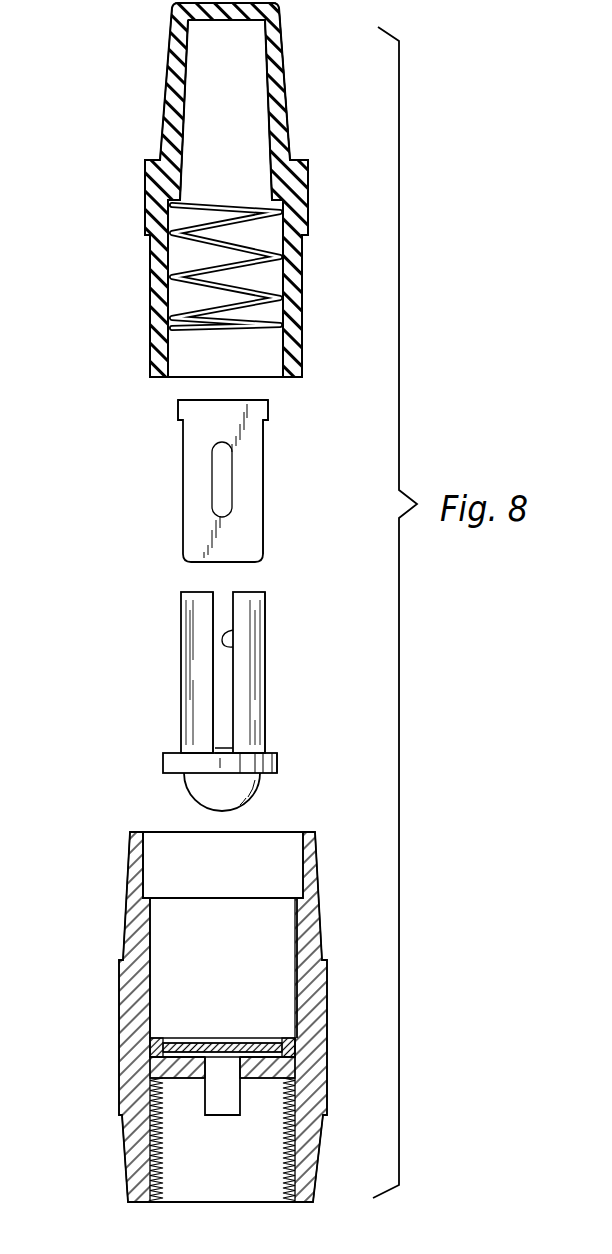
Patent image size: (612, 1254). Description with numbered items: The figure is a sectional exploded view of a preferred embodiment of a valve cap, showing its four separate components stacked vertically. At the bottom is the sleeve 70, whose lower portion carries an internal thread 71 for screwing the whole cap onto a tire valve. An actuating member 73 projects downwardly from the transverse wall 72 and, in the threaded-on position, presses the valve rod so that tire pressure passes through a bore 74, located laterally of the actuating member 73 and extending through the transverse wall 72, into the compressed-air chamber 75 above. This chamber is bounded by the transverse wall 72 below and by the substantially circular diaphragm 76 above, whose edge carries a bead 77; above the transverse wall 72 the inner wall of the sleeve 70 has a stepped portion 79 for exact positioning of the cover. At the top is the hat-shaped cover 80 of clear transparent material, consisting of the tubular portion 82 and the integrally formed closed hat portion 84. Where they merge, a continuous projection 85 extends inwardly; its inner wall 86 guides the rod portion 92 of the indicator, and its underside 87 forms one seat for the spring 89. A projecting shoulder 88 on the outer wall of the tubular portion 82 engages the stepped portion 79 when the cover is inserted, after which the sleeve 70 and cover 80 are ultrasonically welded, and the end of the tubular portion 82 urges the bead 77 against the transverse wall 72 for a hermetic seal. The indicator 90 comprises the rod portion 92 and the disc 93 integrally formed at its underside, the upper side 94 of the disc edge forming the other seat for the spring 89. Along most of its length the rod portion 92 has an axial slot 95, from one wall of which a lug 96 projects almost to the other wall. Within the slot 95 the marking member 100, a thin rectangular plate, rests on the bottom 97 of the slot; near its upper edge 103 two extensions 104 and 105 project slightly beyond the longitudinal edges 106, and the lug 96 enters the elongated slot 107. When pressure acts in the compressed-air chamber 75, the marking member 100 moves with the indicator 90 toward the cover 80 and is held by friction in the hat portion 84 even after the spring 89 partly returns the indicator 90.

The sleeve 70 is at (116, 985).
The internal thread 71 is at (158, 1160).
The transverse wall 72 is at (175, 1072).
The actuating member 73 is at (225, 1105).
The bore 74 is at (290, 1110).
The compressed-air chamber 75 is at (192, 1055).
The diaphragm 76 is at (232, 1042).
The bead 77 is at (180, 1050).
The stepped portion 79 is at (145, 890).
The hat-shaped cover 80 is at (148, 300).
The tubular portion 82 is at (300, 272).
The hat portion 84 is at (282, 87).
The projection 85 is at (160, 186).
The inner wall 86 is at (183, 168).
The underside 87 is at (170, 202).
The projecting shoulder 88 is at (148, 232).
The spring 89 is at (275, 298).
The indicator 90 is at (179, 678).
The rod portion 92 is at (258, 672).
The disc 93 is at (276, 764).
The upper side 94 is at (272, 755).
The slot 95 is at (218, 598).
The lug 96 is at (232, 636).
The bottom 97 is at (218, 746).
The marking member 100 is at (181, 515).
The upper edge 103 is at (245, 397).
The extension 104 is at (272, 412).
The extension 105 is at (180, 412).
The longitudinal edges 106 is at (264, 492).
The elongated slot 107 is at (220, 482).